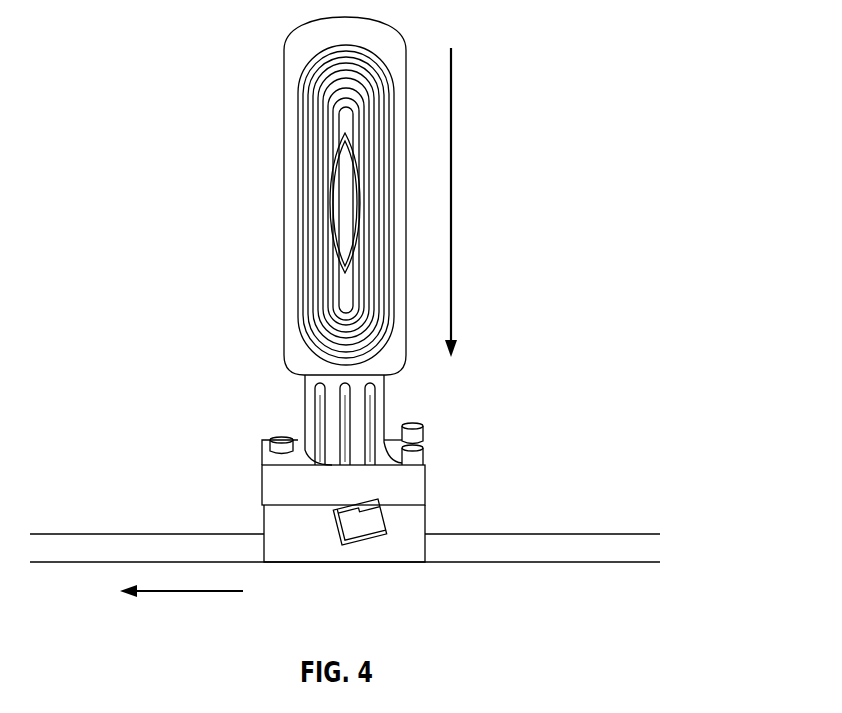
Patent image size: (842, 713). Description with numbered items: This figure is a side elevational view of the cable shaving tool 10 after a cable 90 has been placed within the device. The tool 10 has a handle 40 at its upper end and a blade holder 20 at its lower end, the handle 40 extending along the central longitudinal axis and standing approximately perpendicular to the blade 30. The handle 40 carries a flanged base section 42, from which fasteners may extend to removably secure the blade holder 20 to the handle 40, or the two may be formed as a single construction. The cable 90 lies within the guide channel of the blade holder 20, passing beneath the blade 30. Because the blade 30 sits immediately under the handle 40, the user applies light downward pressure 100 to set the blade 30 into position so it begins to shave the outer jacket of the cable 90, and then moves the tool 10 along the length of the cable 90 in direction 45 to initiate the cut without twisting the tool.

The cable shaving tool 10 is at (228, 86).
The handle 40 is at (303, 235).
The base section 42 is at (283, 472).
The blade holder 20 is at (266, 520).
The blade 30 is at (368, 520).
The cable 90 is at (543, 541).
The downward pressure 100 is at (452, 165).
The direction 45 is at (167, 592).